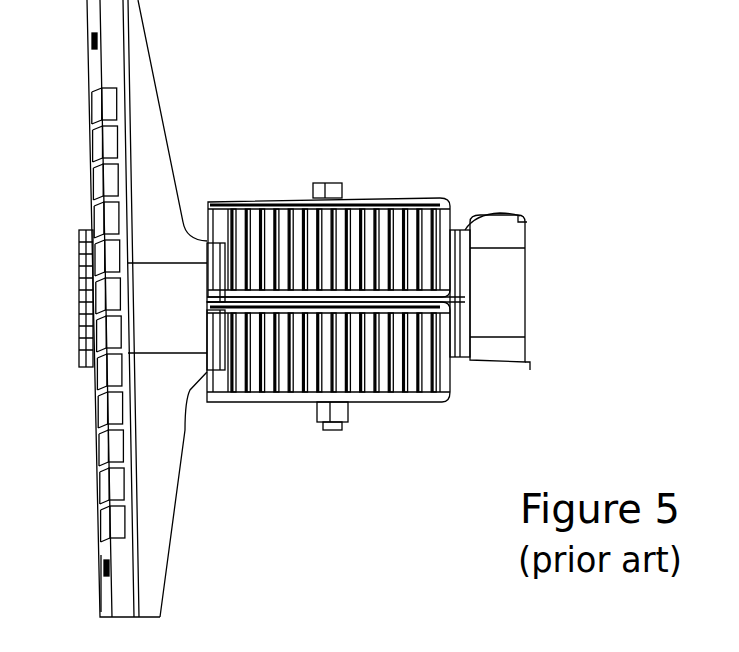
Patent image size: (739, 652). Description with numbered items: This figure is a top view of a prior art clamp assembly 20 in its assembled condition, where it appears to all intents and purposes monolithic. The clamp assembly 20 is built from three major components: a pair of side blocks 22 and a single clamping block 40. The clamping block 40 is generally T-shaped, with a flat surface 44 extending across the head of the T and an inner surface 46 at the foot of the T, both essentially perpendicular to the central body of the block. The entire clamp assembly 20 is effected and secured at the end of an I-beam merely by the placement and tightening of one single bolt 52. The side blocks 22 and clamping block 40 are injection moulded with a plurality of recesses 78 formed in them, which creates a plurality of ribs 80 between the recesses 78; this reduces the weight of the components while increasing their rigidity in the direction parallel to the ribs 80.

The clamp assembly 20 is at (302, 117).
The side blocks 22 is at (358, 218).
The clamping block 40 is at (176, 157).
The flat surface 44 is at (80, 125).
The inner surface 46 is at (527, 295).
The bolt 52 is at (335, 188).
The recesses 78 is at (331, 214).
The ribs 80 is at (418, 437).